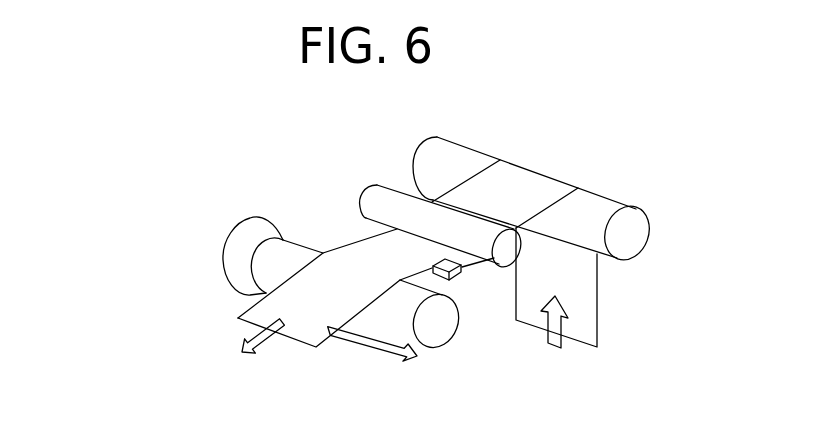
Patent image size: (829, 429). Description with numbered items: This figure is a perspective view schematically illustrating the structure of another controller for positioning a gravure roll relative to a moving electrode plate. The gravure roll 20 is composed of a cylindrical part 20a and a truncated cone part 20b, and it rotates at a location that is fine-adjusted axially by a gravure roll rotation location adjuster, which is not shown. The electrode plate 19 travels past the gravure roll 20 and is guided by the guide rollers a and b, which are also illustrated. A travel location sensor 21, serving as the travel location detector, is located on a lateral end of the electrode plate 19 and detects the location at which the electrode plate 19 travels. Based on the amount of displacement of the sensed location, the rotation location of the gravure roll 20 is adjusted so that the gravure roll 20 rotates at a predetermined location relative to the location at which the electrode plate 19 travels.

The gravure roll 20 is at (191, 241).
The cylindrical part 20a is at (277, 268).
The truncated cone part 20b is at (240, 238).
The guide roller a is at (368, 197).
The guide roller b is at (423, 152).
The electrode plate 19 is at (585, 292).
The travel location sensor 21 is at (458, 277).